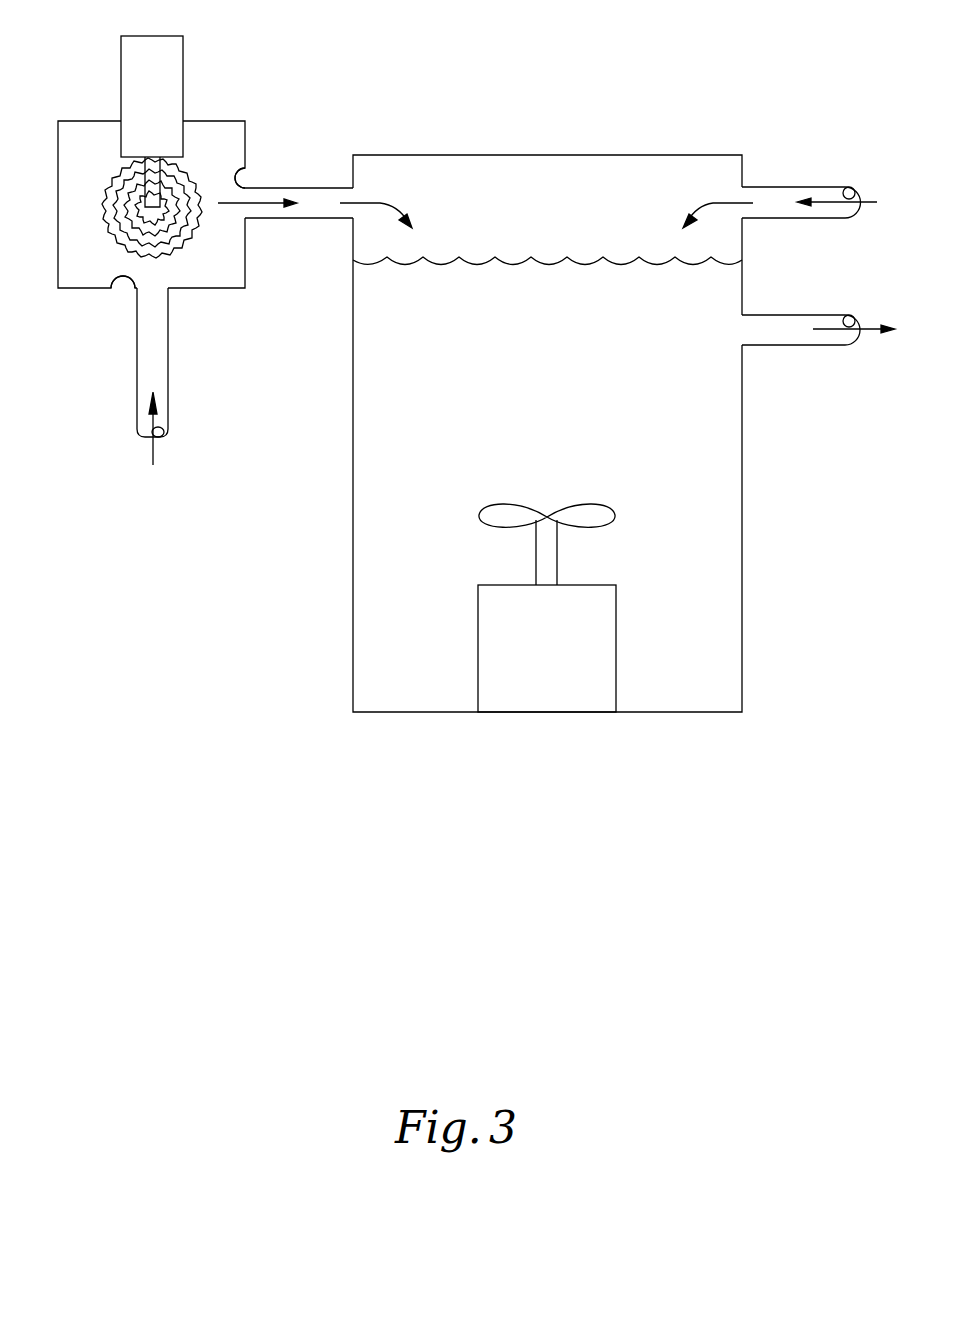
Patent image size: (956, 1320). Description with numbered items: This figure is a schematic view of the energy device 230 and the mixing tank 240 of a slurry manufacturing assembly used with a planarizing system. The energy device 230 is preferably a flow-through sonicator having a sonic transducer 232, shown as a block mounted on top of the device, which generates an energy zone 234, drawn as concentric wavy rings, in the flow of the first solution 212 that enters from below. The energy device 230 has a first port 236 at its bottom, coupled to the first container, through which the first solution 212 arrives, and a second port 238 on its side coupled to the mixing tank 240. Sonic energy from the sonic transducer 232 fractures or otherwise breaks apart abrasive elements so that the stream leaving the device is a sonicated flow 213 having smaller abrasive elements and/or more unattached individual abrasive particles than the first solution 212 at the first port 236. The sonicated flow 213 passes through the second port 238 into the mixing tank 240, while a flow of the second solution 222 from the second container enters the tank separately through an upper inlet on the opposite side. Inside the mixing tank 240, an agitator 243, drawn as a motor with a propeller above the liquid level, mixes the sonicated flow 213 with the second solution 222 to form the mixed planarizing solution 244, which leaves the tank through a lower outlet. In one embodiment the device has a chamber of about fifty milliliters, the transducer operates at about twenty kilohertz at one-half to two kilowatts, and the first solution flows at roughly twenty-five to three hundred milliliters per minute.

The first solution 212 is at (155, 452).
The sonicated flow 213 is at (380, 203).
The second solution 222 is at (713, 203).
The energy device 230 is at (92, 121).
The sonic transducer 232 is at (183, 75).
The energy zone 234 is at (193, 184).
The first port 236 is at (113, 292).
The second port 238 is at (248, 168).
The mixing tank 240 is at (742, 568).
The agitator 243 is at (648, 526).
The mixed planarizing solution 244 is at (855, 333).